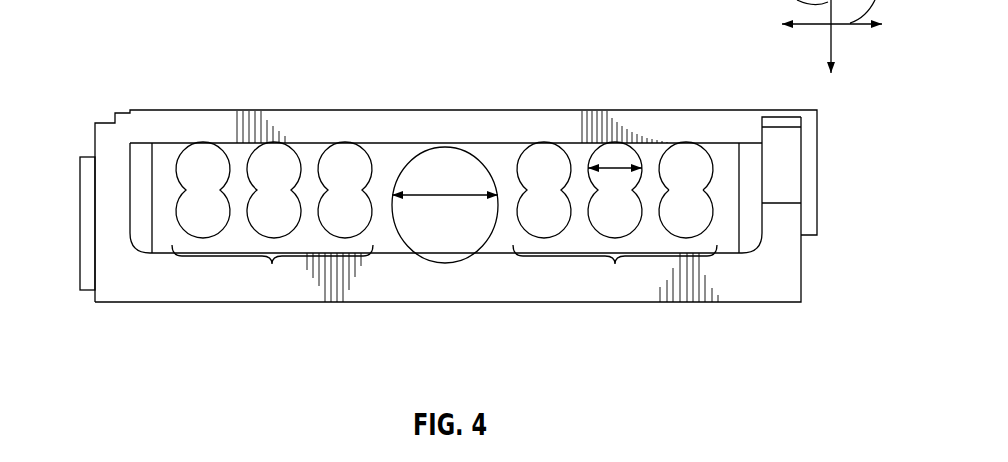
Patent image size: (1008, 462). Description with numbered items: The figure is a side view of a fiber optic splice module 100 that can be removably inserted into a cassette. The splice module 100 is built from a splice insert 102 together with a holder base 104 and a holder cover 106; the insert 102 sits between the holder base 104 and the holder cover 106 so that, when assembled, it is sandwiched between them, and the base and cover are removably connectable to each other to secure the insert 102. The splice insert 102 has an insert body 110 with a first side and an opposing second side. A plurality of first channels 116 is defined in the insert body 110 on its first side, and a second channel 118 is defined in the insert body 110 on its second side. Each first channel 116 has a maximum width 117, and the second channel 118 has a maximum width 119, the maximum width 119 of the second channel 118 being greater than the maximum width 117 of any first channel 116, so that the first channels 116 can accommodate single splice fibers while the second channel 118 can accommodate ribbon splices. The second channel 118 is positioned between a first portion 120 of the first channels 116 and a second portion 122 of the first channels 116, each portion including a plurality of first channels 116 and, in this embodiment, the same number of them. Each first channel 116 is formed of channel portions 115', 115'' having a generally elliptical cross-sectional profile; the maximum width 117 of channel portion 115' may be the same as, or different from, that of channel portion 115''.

The splice module 100 is at (542, 78).
The splice insert 102 is at (752, 173).
The holder base 104 is at (345, 130).
The holder cover 106 is at (208, 283).
The insert body 110 is at (165, 148).
The channel portion 115' is at (688, 115).
The channel portion 115'' is at (772, 205).
The first channel 116 is at (170, 226).
The maximum width 117 is at (617, 165).
The second channel 118 is at (450, 249).
The maximum width 119 is at (463, 195).
The first portion 120 is at (272, 222).
The second portion 122 is at (615, 221).